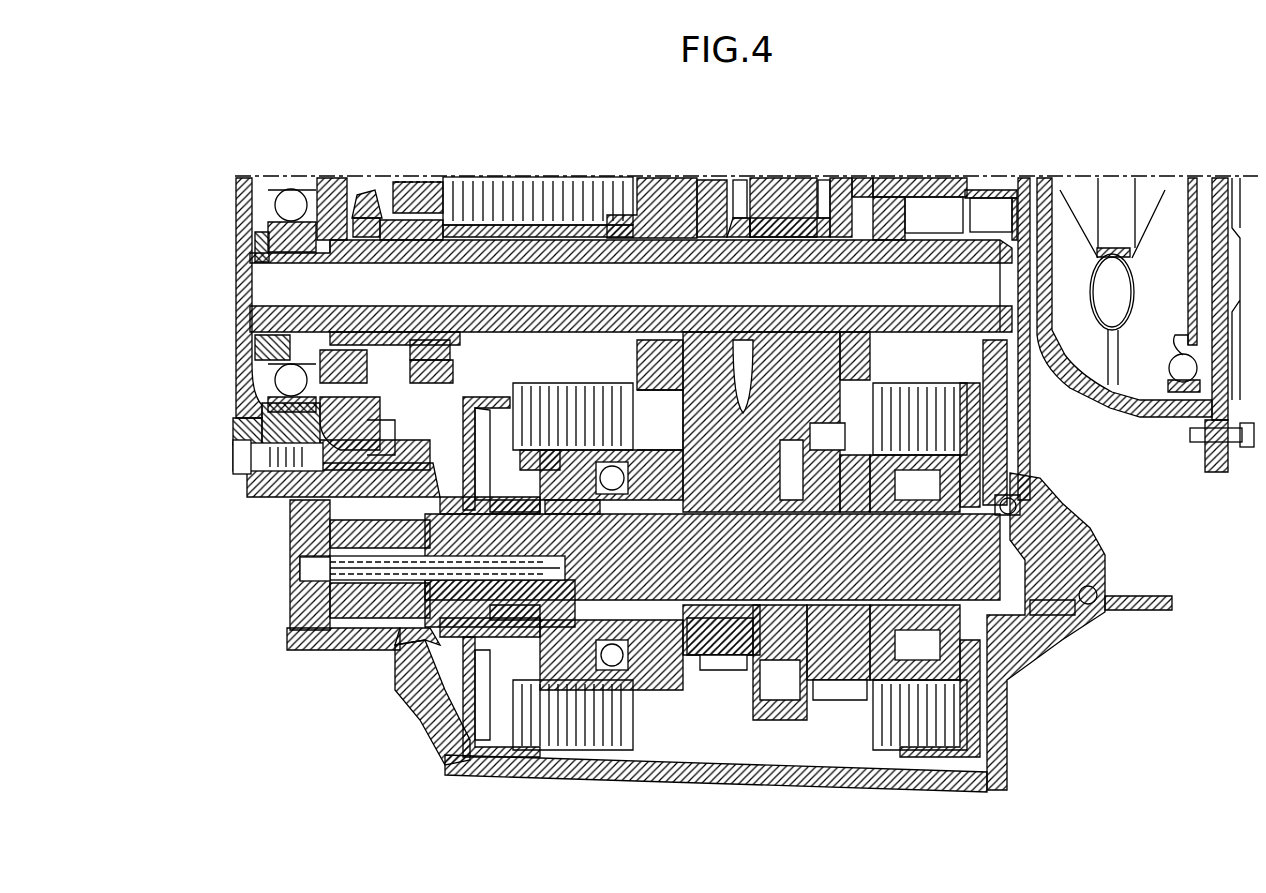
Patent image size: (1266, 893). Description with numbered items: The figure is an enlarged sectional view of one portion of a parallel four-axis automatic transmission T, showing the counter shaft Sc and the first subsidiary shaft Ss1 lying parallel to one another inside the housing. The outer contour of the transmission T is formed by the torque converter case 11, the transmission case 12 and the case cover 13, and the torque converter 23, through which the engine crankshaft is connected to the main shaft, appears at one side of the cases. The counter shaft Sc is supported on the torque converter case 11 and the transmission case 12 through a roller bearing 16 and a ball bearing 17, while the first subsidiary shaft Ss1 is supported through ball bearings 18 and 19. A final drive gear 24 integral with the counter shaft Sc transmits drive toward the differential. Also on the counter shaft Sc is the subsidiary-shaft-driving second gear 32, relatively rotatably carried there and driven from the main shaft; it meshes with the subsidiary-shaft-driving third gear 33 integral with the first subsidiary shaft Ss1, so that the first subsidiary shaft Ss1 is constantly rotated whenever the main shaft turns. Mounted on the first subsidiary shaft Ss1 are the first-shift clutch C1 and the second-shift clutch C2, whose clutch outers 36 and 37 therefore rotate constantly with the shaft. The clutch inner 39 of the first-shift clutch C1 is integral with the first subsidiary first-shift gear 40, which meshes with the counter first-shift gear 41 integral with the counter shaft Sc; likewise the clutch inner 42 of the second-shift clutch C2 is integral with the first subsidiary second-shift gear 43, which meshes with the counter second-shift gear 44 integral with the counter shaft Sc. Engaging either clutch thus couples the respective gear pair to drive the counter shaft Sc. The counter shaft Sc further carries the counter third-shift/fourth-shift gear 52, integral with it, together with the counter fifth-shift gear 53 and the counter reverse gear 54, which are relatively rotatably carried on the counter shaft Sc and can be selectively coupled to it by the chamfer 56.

The torque converter case 11 is at (997, 772).
The transmission case 12 is at (815, 778).
The case cover 13 is at (238, 305).
The roller bearing 16 is at (992, 215).
The ball bearing 17 is at (292, 193).
The ball bearing 18 is at (1003, 493).
The ball bearing 19 is at (408, 683).
The torque converter 23 is at (1105, 414).
The final drive gear 24 is at (915, 223).
The subsidiary-shaft-driving second gear 32 is at (773, 178).
The subsidiary-shaft-driving third gear 33 is at (790, 716).
The clutch outer 36 is at (522, 400).
The clutch outer 37 is at (920, 385).
The clutch inner 39 is at (548, 520).
The first subsidiary first-shift gear 40 is at (730, 662).
The counter first-shift gear 41 is at (729, 178).
The clutch inner 42 is at (1008, 405).
The first subsidiary second-shift gear 43 is at (833, 693).
The counter second-shift gear 44 is at (835, 178).
The counter third-shift/fourth-shift gear 52 is at (686, 392).
The counter fifth-shift gear 53 is at (432, 378).
The counter reverse gear 54 is at (358, 437).
The chamfer 56 is at (368, 195).
The first-shift clutch C1 is at (573, 580).
The second-shift clutch C2 is at (925, 549).
The automatic transmission T is at (366, 670).
The counter shaft Sc is at (850, 301).
The first subsidiary shaft Ss1 is at (808, 557).